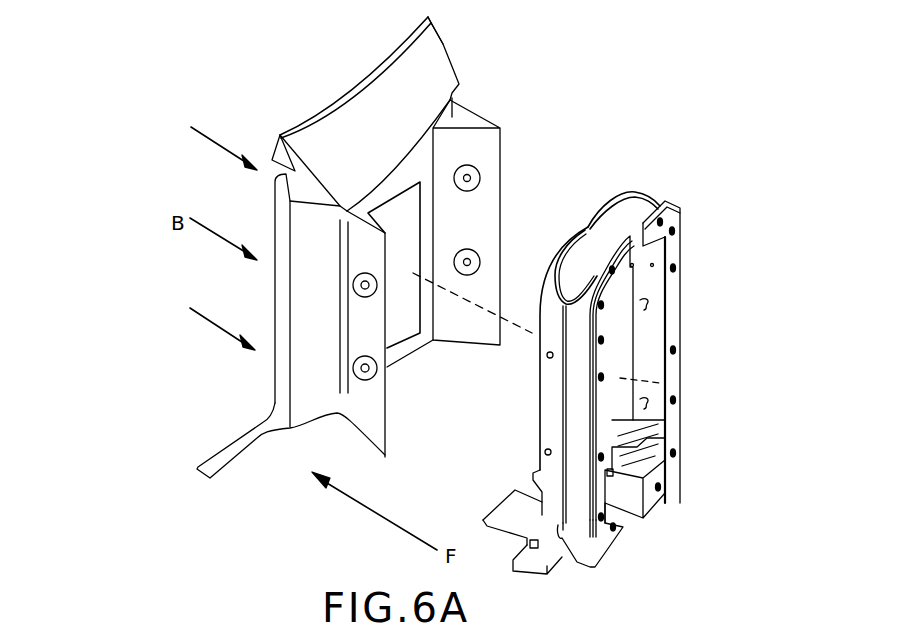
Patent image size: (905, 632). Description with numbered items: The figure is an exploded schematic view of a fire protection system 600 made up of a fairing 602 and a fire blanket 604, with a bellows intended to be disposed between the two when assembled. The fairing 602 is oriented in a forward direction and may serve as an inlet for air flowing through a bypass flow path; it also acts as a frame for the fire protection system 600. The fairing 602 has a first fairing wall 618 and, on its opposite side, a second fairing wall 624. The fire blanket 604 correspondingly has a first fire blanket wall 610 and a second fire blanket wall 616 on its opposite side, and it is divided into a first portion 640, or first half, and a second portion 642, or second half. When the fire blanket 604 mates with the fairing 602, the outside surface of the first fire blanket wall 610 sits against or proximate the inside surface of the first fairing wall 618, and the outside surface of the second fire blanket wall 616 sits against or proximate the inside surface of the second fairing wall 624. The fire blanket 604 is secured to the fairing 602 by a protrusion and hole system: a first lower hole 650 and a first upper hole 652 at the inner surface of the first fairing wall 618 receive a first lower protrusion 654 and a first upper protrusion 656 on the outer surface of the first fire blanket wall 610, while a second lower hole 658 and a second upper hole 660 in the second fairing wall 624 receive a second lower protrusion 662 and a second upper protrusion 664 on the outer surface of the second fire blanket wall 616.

The fire protection system 600 is at (182, 83).
The fairing 602 is at (428, 70).
The fire blanket 604 is at (680, 210).
The first fire blanket wall 610 is at (552, 385).
The second fire blanket wall 616 is at (652, 333).
The first fairing wall 618 is at (367, 409).
The second fairing wall 624 is at (488, 136).
The first portion 640 is at (605, 543).
The second portion 642 is at (670, 485).
The first lower hole 650 is at (368, 370).
The first upper hole 652 is at (368, 287).
The first lower protrusion 654 is at (545, 452).
The first upper protrusion 656 is at (547, 355).
The second lower hole 658 is at (470, 262).
The second upper hole 660 is at (470, 178).
The second lower protrusion 662 is at (647, 403).
The second upper protrusion 664 is at (647, 304).